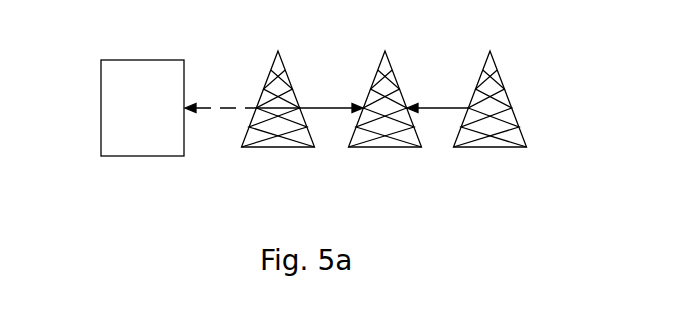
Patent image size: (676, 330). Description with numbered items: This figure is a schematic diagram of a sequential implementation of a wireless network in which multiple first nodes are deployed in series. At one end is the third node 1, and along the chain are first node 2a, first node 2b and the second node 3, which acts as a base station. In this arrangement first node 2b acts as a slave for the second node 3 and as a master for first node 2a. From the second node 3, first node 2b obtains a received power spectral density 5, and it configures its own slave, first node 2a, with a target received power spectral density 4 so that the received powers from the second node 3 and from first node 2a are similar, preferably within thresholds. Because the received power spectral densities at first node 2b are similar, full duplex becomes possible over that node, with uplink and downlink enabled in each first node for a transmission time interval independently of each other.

The third node 1 is at (101, 109).
The first node 2a is at (247, 126).
The first node 2b is at (415, 131).
The second node 3 is at (523, 135).
The target received power spectral density 4 is at (331, 108).
The received power spectral density 5 is at (442, 108).